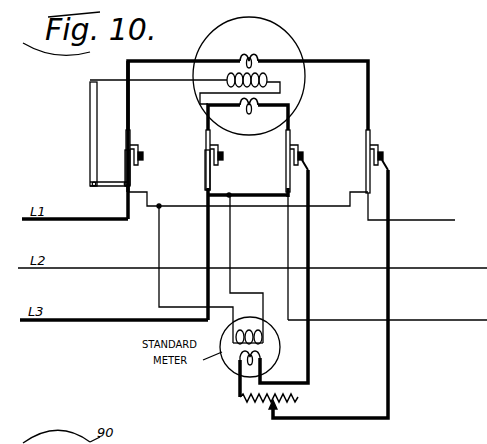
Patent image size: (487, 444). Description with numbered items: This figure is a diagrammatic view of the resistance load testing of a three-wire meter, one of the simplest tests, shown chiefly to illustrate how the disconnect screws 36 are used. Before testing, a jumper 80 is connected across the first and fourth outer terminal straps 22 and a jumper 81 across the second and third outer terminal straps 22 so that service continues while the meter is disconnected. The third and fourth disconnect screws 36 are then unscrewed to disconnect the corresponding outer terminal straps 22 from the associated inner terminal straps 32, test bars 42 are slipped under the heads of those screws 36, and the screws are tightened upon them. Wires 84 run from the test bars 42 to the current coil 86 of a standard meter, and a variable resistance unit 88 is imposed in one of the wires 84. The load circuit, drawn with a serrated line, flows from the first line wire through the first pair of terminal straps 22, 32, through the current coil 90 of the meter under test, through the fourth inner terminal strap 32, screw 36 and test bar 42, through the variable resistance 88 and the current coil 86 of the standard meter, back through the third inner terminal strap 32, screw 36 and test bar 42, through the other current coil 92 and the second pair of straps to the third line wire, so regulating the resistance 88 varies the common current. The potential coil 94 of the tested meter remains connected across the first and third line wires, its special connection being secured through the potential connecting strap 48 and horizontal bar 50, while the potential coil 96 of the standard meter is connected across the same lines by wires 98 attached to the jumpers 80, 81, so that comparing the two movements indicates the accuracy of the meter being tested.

The outer terminal strap 22 is at (206, 172).
The inner terminal strap 32 is at (205, 135).
The disconnect screw 36 is at (143, 156).
The test bar 42 is at (309, 165).
The potential connecting strap 48 is at (90, 138).
The horizontal bar 50 is at (100, 188).
The jumper 80 is at (173, 206).
The jumper 81 is at (241, 194).
The wire 84 is at (310, 235).
The current coil of standard meter 86 is at (226, 375).
The variable resistance unit 88 is at (257, 405).
The current coil of meter to be tested 90 is at (249, 55).
The current coil of meter to be tested 92 is at (249, 115).
The potential coil of meter to be tested 94 is at (270, 82).
The potential coil of standard meter 96 is at (262, 339).
The wire 98 is at (161, 240).